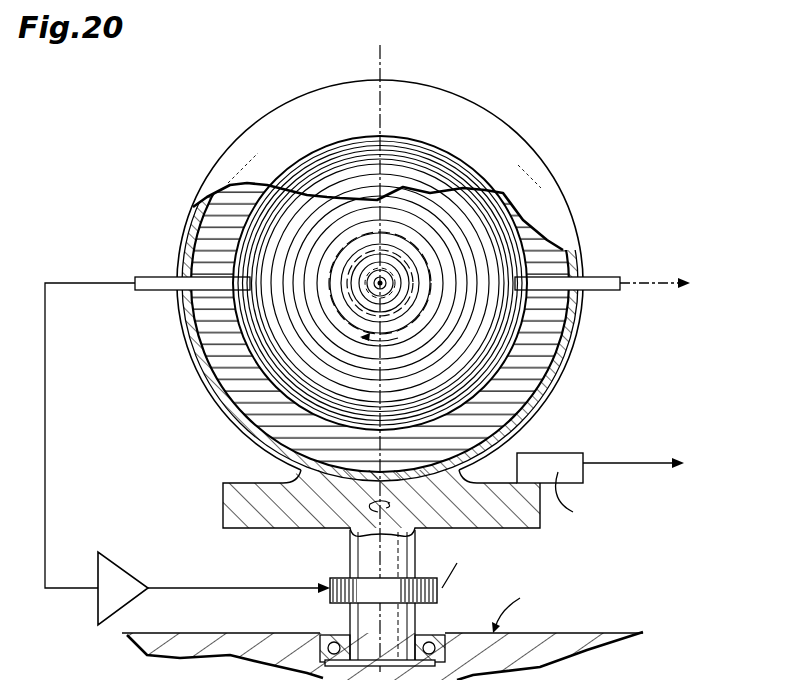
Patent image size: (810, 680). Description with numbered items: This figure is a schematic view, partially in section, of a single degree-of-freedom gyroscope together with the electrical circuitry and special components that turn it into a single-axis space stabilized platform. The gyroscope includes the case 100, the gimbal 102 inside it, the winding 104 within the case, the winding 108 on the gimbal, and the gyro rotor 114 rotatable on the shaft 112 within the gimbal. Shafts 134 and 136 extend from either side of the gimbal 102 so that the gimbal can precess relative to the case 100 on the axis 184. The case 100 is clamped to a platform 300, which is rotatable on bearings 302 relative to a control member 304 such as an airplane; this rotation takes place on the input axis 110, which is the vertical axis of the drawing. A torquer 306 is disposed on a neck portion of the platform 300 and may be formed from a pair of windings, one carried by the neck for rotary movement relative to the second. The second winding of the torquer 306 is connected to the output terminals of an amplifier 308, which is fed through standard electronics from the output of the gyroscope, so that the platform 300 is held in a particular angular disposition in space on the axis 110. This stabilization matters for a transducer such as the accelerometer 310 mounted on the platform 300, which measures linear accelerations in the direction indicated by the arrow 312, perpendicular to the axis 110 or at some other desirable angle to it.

The case 100 is at (582, 240).
The gimbal 102 is at (528, 231).
The winding within the case 104 is at (547, 340).
The winding on the gimbal 108 is at (447, 210).
The input axis 110 is at (385, 78).
The shaft 112 is at (391, 272).
The gyro rotor 114 is at (350, 242).
The shaft 134 is at (602, 290).
The shaft 136 is at (197, 280).
The axis 184 is at (650, 283).
The platform 300 is at (297, 508).
The bearings 302 is at (428, 637).
The control member 304 is at (385, 635).
The torquer 306 is at (340, 578).
The amplifier 308 is at (136, 580).
The accelerometer 310 is at (572, 455).
The arrow 312 is at (640, 463).